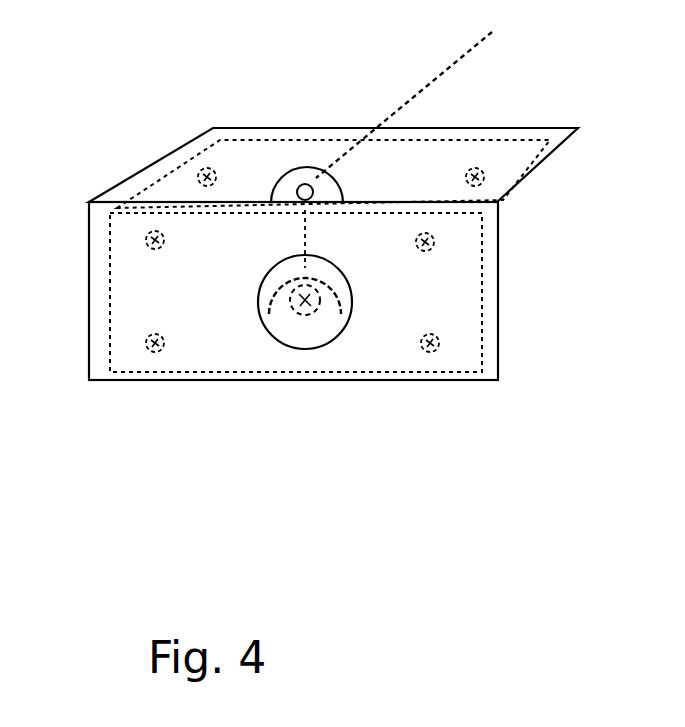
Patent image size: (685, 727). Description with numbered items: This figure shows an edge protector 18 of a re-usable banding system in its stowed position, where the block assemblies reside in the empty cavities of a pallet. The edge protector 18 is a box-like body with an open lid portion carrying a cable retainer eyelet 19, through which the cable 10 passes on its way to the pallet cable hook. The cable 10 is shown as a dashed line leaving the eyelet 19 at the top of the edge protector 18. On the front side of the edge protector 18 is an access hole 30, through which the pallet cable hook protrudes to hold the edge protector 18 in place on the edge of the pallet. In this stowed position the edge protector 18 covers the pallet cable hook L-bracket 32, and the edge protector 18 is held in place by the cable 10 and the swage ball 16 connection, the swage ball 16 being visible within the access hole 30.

The cable 10 is at (470, 62).
The swage ball 16 is at (315, 330).
The edge protector 18 is at (162, 146).
The cable retainer eyelet 19 is at (297, 160).
The access hole 30 is at (358, 270).
The pallet cable hook L-bracket 32 is at (270, 291).